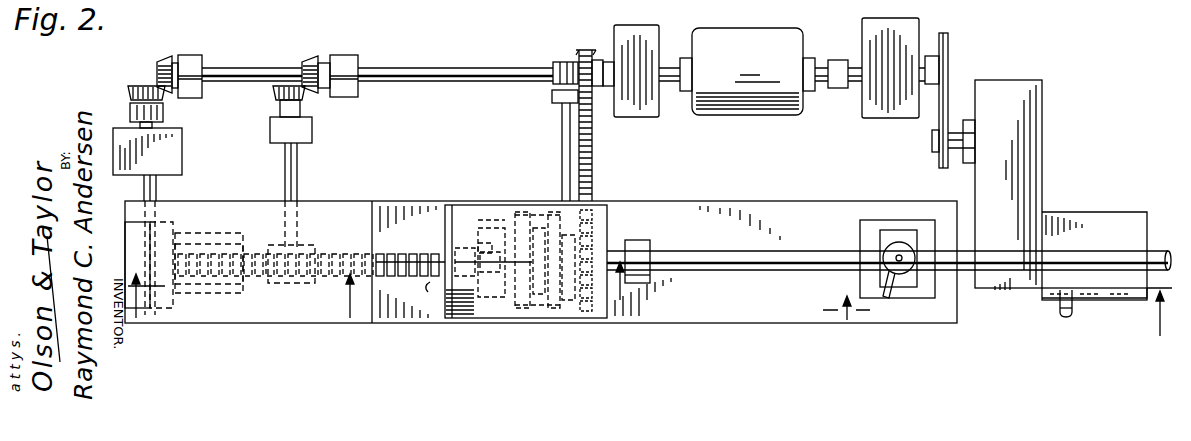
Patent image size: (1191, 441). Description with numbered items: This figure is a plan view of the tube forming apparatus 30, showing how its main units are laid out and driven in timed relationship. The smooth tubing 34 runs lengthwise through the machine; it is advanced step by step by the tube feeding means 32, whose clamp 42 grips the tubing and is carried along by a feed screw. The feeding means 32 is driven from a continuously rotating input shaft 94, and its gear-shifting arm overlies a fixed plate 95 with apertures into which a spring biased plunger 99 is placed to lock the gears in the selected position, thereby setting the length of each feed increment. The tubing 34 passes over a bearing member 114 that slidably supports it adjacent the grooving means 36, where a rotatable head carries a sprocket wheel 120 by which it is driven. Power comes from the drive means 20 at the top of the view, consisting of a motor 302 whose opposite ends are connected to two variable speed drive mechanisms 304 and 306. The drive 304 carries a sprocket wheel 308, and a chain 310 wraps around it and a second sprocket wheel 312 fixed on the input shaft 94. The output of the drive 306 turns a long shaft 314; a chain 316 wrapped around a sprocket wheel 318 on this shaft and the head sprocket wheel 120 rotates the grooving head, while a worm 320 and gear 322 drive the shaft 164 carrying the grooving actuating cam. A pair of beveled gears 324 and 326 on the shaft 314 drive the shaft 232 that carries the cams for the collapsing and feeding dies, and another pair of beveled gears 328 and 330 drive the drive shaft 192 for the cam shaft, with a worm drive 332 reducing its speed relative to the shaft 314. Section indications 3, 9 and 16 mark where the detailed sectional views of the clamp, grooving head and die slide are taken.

The section line 3- 3 is at (997, 318).
The section line 9- 9 is at (522, 288).
The section line 16- 16 is at (244, 311).
The drive motor unit 20 is at (760, 83).
The apparatus 30 is at (628, 322).
The tube feeding means 32 is at (1057, 197).
The tubing 34 is at (800, 258).
The grooving means 36 is at (468, 320).
The clamp 42 is at (858, 278).
The input shaft 94 is at (957, 133).
The fixed plate 95 is at (1100, 300).
The spring biased plunger 99 is at (1060, 312).
The bearing member 114 is at (641, 240).
The sprocket wheel 120 is at (580, 320).
The drive shaft 164 is at (562, 165).
The drive shaft 192 is at (156, 192).
The drive shaft 232 is at (298, 172).
The motor 302 is at (733, 118).
The variable speed drive mechanism 304 is at (893, 28).
The variable speed drive mechanism 306 is at (628, 32).
The sprocket wheel 308 is at (936, 63).
The chain 310 is at (950, 95).
The sprocket wheel 312 is at (940, 155).
The shaft 314 is at (451, 67).
The chain 316 is at (565, 130).
The sprocket wheel 318 is at (598, 58).
The worm 320 is at (553, 83).
The gear 322 is at (563, 60).
The beveled gear 324 is at (308, 57).
The beveled gear 326 is at (277, 89).
The beveled gear 328 is at (160, 63).
The beveled gear 330 is at (136, 88).
The worm drive 332 is at (120, 130).